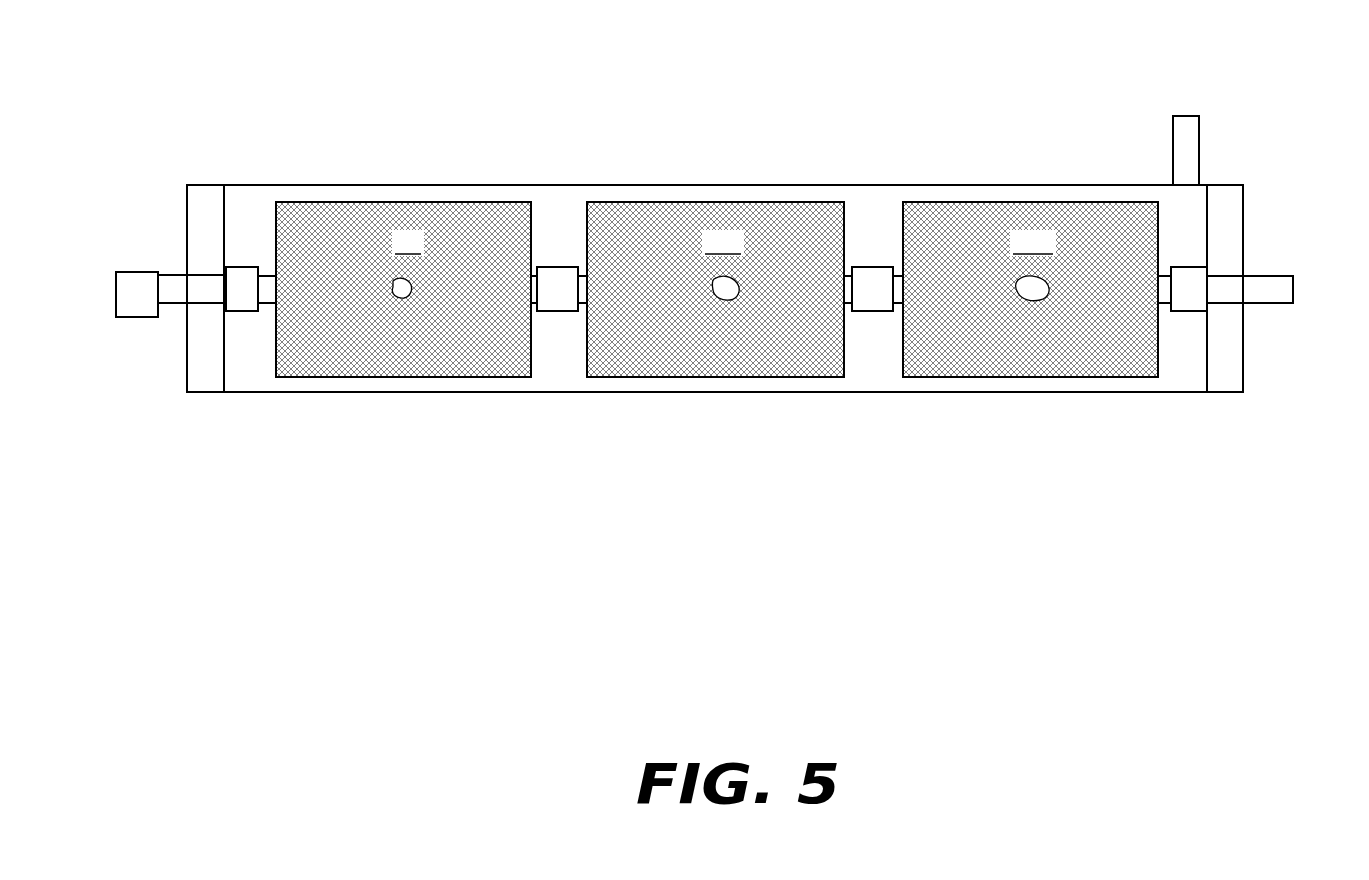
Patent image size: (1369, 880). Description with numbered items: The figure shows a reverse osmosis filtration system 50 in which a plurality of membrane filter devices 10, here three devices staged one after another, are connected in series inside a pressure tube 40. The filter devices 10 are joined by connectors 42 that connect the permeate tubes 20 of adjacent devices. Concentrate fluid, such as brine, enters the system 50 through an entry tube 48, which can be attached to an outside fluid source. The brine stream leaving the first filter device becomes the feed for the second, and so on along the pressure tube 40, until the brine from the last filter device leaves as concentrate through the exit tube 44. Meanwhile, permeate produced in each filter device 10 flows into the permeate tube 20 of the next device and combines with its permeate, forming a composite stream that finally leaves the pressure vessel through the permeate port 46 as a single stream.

The membrane filter device 10 is at (433, 352).
The permeate tube 20 is at (267, 283).
The pressure tube 40 is at (1184, 377).
The connector 42 is at (558, 287).
The exit tube 44 is at (1190, 137).
The permeate port 46 is at (1267, 286).
The entry tube 48 is at (136, 288).
The reverse osmosis filtration system 50 is at (733, 147).